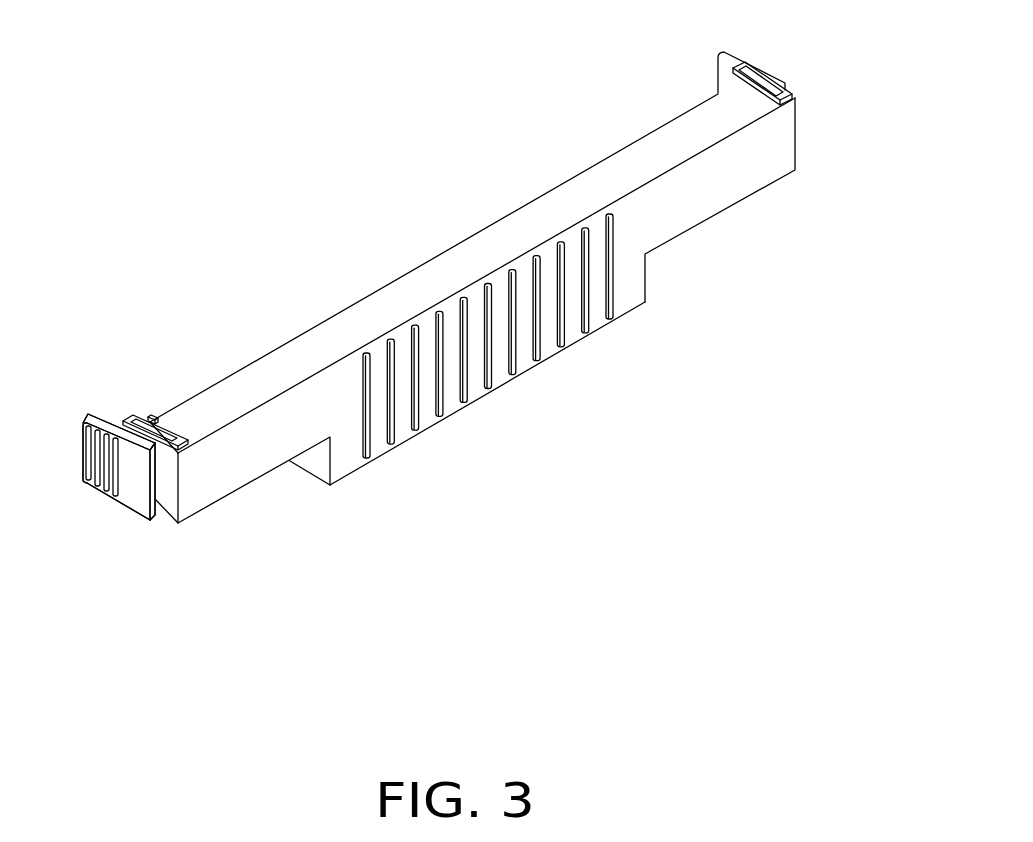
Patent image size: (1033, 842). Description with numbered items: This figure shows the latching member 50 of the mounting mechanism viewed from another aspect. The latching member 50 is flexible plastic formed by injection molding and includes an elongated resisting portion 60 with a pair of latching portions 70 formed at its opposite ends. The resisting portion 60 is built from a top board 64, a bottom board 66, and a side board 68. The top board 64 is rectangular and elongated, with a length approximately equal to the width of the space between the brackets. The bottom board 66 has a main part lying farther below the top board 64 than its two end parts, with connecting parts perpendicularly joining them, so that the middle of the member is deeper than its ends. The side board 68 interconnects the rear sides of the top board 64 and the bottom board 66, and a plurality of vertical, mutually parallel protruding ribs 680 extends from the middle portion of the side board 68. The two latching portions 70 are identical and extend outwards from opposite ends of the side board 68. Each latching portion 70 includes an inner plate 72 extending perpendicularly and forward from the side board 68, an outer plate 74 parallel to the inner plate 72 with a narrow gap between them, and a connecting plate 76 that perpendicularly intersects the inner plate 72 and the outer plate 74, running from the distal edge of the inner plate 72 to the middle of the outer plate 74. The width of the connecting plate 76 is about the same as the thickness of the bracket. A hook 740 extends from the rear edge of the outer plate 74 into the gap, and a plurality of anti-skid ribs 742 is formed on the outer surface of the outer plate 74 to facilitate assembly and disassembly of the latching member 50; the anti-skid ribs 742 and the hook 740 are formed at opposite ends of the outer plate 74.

The latching member 50 is at (291, 118).
The resisting portion 60 is at (838, 283).
The top board 64 is at (698, 130).
The bottom board 66 is at (573, 345).
The side board 68 is at (662, 225).
The protruding ribs 680 is at (417, 390).
The latching portions 70 is at (750, 70).
The inner plate 72 is at (172, 433).
The outer plate 74 is at (85, 420).
The connecting plate 76 is at (128, 425).
The hook 740 is at (152, 487).
The anti-skid ribs 742 is at (107, 468).